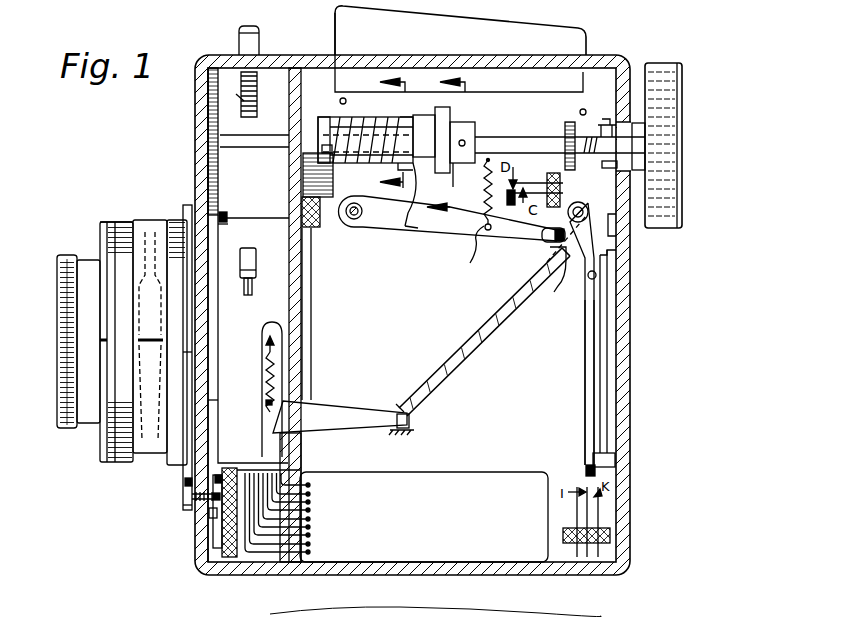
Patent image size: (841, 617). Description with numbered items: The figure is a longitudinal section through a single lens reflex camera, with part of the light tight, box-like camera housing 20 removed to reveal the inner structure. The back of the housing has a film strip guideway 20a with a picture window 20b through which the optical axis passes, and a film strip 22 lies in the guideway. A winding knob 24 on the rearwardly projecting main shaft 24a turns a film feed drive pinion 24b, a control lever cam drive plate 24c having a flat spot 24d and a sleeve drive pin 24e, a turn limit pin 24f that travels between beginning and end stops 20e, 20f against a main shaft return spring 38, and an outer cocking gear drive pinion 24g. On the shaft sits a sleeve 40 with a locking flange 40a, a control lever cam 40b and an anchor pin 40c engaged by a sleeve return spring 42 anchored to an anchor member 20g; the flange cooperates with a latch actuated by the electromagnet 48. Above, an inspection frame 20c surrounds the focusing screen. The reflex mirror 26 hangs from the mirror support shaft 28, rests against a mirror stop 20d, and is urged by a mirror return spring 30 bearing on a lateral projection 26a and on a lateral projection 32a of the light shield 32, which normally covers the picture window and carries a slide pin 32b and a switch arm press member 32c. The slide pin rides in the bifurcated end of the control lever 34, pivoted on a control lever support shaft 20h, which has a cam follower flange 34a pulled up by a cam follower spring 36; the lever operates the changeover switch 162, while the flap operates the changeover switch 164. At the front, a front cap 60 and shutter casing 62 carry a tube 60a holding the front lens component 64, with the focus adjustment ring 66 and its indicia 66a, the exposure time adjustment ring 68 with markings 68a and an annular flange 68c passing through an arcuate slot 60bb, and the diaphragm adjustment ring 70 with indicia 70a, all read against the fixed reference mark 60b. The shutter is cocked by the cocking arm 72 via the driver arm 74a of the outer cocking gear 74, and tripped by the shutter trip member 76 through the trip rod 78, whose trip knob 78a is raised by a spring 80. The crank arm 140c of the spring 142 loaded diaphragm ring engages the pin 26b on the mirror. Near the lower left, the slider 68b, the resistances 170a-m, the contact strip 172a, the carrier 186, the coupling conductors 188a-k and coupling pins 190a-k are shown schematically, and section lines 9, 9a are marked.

The camera housing 20 is at (497, 568).
The film strip guideway 20a is at (586, 442).
The picture window 20b is at (598, 377).
The inspection frame 20c is at (335, 32).
The mirror stop 20d is at (412, 422).
The beginning stop 20e is at (612, 122).
The end stop 20f is at (620, 164).
The anchor member 20g is at (345, 97).
The control lever support shaft 20h is at (344, 224).
The film strip 22 is at (612, 343).
The winding knob 24 is at (668, 70).
The main shaft 24a is at (514, 146).
The film feed drive pinion 24b is at (581, 111).
The control lever cam drive plate 24c is at (452, 115).
The flat spot 24d is at (477, 195).
The sleeve drive pin 24e is at (425, 115).
The turn limit pin 24f is at (633, 62).
The outer cocking gear drive pinion 24g is at (214, 152).
The reflex mirror 26 is at (480, 334).
The lateral projection 26a is at (564, 264).
The pin 26b is at (402, 398).
The mirror support shaft 28 is at (586, 205).
The mirror return spring 30 is at (597, 250).
The light shield 32 is at (588, 330).
The lateral projection 32a is at (598, 277).
The slide pin 32b is at (543, 239).
The switch arm press member 32c is at (587, 467).
The control lever 34 is at (438, 229).
The cam follower flange 34a is at (415, 230).
The cam follower spring 36 is at (471, 255).
The main shaft return spring 38 is at (578, 92).
The sleeve 40 is at (354, 120).
The locking flange 40a is at (323, 119).
The control lever cam 40b is at (395, 226).
The anchor pin 40c is at (405, 117).
The sleeve return spring 42 is at (374, 167).
The cocked position latch electromagnet 48 is at (308, 164).
The front cap 60 is at (205, 118).
The tube 60a is at (149, 457).
The fixed reference mark 60b is at (151, 336).
The arcuate slot 60bb is at (185, 508).
The shutter casing 62 is at (268, 226).
The front lens component 64 is at (153, 221).
The focus adjustment ring 66 is at (67, 432).
The focusing scale indicia 66a is at (88, 262).
The exposure time adjustment ring 68 is at (186, 206).
The time scale markings 68a is at (184, 353).
The slider 68b is at (212, 516).
The annular flange 68c is at (185, 480).
The diaphragm opening adjustment ring 70 is at (117, 467).
The scale indicia 70a is at (127, 221).
The cocking arm 72 is at (230, 238).
The outer cocking gear 74 is at (213, 400).
The driver arm 74a is at (225, 212).
The shutter trip member 76 is at (253, 288).
The camera trip rod 78 is at (258, 116).
The trip knob 78a is at (239, 33).
The spring 80 is at (240, 98).
The crank arm 140c is at (336, 412).
The spring 142 is at (266, 360).
The changeover switch 162 is at (549, 178).
The changeover switch 164 is at (583, 507).
The resistances 170a-m is at (212, 556).
The contact strip 172a is at (223, 470).
The carrier 186 is at (474, 480).
The coupling conductors 188a-k is at (310, 520).
The coupling pins 190a-k is at (298, 467).
The section line 9 is at (450, 149).
The section line 9a is at (381, 136).